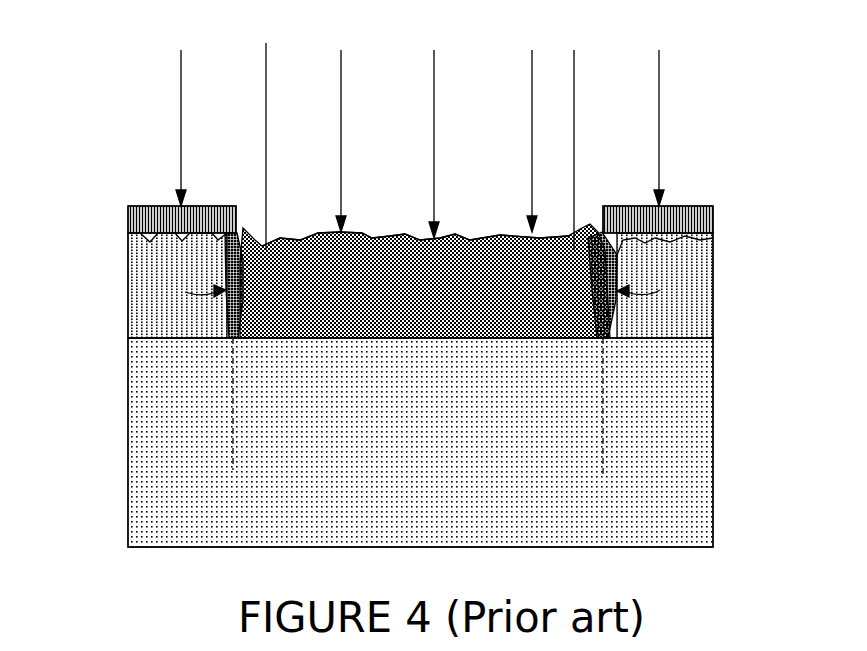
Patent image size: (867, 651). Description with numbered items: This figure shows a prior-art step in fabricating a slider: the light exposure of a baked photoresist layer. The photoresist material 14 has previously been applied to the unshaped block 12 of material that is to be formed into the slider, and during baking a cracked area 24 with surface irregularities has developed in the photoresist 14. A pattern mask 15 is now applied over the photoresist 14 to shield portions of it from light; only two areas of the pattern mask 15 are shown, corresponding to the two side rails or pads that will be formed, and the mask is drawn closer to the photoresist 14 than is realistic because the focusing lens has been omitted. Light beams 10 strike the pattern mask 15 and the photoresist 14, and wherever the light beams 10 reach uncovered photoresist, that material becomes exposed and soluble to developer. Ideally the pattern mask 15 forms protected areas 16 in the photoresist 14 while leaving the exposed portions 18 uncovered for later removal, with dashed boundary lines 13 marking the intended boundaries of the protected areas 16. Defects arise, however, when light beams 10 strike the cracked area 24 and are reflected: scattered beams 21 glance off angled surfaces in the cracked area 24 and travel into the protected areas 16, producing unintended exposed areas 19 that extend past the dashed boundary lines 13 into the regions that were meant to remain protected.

The light beams 10 is at (180, 136).
The unshaped block 12 is at (143, 428).
The dashed boundary lines 13 is at (236, 363).
The photoresist material 14 is at (128, 310).
The pattern mask 15 is at (128, 206).
The protected areas 16 is at (128, 283).
The exposed portions 18 is at (488, 240).
The unintended exposed areas 19 is at (418, 279).
The scattered beams 21 is at (266, 110).
The cracked area 24 is at (367, 235).